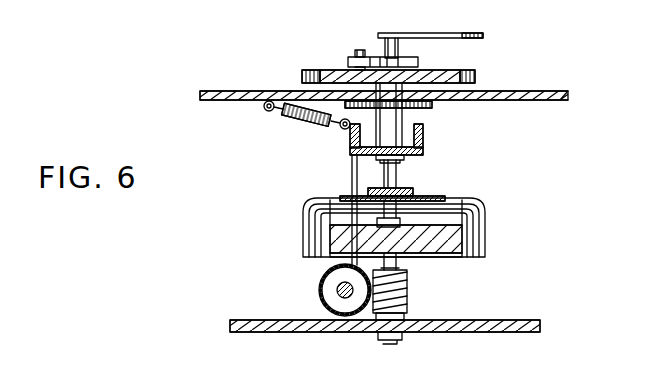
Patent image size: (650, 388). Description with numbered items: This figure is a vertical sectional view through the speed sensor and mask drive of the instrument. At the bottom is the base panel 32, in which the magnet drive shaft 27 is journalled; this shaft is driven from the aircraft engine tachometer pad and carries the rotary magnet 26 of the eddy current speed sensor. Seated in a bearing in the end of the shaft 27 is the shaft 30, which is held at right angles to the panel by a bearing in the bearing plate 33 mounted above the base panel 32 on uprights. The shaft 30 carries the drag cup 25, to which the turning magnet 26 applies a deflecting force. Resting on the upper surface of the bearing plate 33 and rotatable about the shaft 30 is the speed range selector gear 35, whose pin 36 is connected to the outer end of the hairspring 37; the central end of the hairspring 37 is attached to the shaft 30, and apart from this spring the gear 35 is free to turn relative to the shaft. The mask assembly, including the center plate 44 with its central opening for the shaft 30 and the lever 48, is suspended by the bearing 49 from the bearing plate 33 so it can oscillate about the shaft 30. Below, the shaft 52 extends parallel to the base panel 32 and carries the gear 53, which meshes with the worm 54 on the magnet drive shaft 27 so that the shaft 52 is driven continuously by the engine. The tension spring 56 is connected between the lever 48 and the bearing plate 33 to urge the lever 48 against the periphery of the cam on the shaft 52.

The drag cup 25 is at (489, 226).
The rotary magnet 26 is at (396, 239).
The shaft 27 is at (406, 262).
The shaft 30 is at (398, 43).
The base panel 32 is at (520, 327).
The bearing plate 33 is at (242, 99).
The speed range selector gear 35 is at (478, 76).
The pin 36 is at (357, 51).
The hairspring 37 is at (345, 60).
The center plate 44 is at (412, 157).
The lever 48 is at (350, 172).
The bearing 49 is at (404, 118).
The shaft 52 is at (326, 282).
The gear 53 is at (337, 290).
The worm 54 is at (410, 292).
The tension spring 56 is at (308, 122).